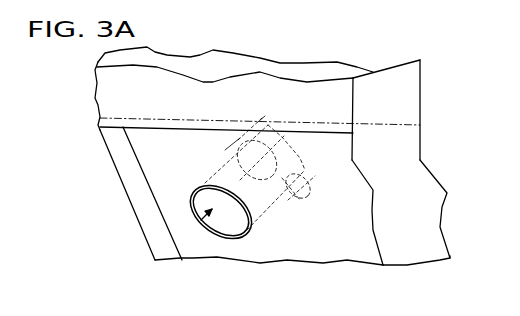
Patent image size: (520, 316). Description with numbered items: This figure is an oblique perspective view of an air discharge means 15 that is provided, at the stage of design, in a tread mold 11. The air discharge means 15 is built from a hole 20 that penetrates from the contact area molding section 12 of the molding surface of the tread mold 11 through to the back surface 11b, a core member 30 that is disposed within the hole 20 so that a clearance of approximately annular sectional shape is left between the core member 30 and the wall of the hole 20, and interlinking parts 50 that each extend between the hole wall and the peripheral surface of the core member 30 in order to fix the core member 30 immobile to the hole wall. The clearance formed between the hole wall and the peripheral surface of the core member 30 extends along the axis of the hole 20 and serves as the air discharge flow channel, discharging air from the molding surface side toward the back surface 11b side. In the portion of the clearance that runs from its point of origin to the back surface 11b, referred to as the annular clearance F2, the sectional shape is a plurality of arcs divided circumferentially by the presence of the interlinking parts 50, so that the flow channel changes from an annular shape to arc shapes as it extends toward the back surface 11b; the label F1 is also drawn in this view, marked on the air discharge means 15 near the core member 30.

The tread mold 11 is at (421, 59).
The back surface 11b is at (427, 169).
The contact area molding section 12 is at (327, 247).
The air discharge means 15 is at (182, 227).
The hole 20 is at (190, 203).
The core member 30 is at (203, 231).
The interlinking parts 50 is at (278, 148).
The force F1 is at (243, 234).
The annular clearance F2 is at (225, 150).